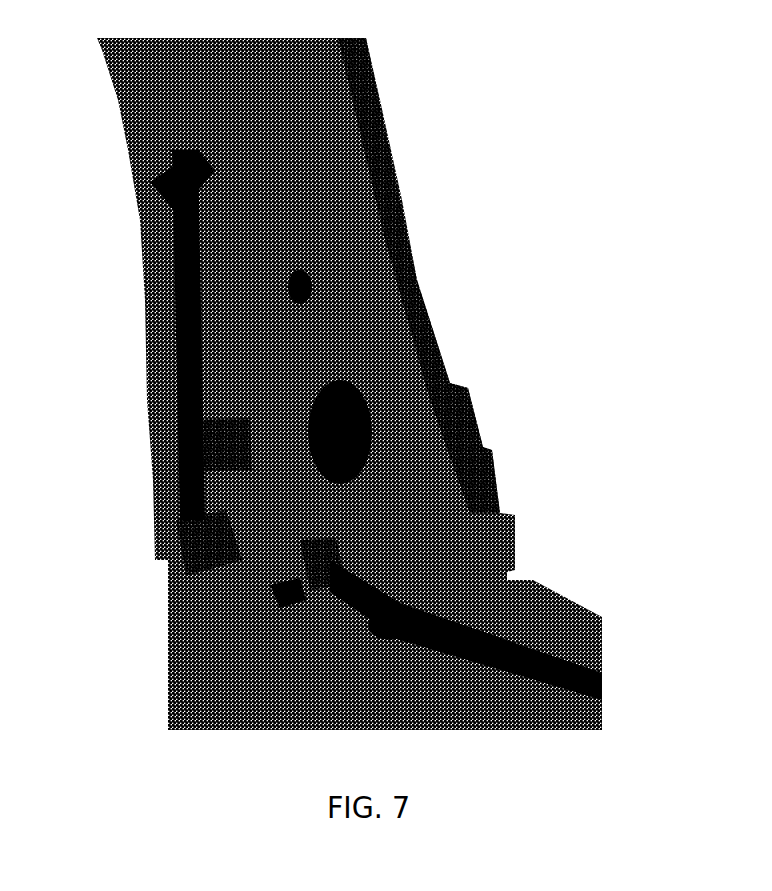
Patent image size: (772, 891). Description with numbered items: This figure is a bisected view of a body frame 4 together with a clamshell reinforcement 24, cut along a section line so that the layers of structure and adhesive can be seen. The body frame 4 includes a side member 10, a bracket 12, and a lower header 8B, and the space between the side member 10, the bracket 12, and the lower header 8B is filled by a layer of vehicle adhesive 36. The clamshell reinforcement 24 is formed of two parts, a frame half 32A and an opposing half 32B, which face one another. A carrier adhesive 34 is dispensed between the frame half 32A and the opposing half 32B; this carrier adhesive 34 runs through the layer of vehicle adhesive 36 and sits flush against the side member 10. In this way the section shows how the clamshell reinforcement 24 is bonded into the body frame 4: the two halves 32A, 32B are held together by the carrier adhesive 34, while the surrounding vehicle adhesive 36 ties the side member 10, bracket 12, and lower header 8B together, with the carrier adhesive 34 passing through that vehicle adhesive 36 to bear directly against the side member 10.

The side member 10 is at (132, 118).
The bracket 12 is at (385, 278).
The carrier adhesive 34 is at (157, 193).
The vehicle adhesive 36 is at (167, 305).
The clamshell reinforcement 24 is at (192, 441).
The frame half 32A is at (220, 523).
The opposing half 32B is at (327, 563).
The lower header 8B is at (392, 628).
The body frame 4 is at (538, 445).